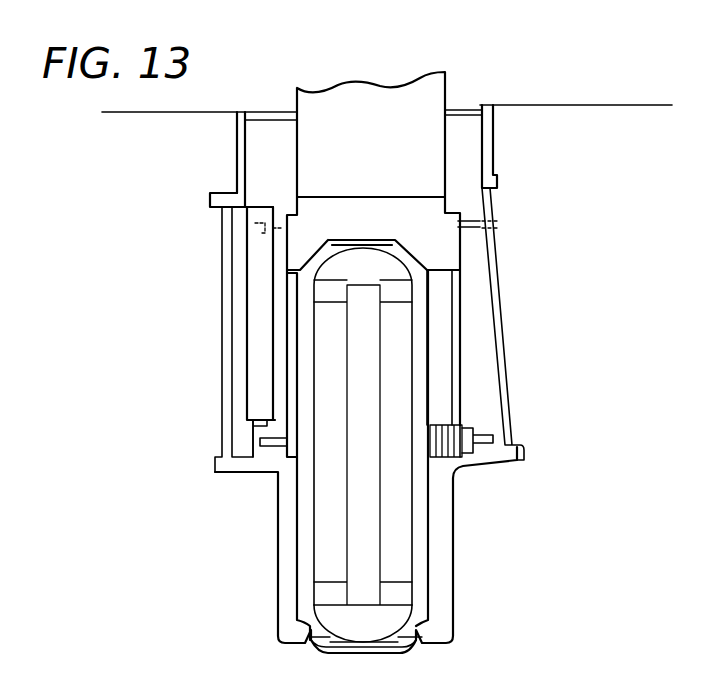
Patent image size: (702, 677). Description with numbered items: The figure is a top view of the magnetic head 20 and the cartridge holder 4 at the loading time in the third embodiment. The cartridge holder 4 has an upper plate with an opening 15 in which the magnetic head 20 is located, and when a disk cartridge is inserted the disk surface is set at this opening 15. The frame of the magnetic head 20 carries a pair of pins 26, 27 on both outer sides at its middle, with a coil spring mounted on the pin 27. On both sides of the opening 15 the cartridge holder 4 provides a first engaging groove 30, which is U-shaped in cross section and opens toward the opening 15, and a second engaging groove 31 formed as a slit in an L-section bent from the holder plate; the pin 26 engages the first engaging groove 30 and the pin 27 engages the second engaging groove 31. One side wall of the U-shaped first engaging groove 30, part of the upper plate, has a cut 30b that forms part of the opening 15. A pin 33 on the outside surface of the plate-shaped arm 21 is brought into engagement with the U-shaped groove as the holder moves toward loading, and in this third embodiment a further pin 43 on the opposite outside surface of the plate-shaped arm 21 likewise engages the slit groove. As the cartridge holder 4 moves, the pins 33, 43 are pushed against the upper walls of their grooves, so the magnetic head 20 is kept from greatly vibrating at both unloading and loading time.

The cartridge holder 4 is at (652, 179).
The opening 15 is at (433, 610).
The magnetic head 20 is at (443, 537).
The plate-shaped arm 21 is at (463, 146).
The pin 26 is at (273, 446).
The pin 27 is at (485, 445).
The first engaging groove 30 is at (260, 330).
The cut 30b is at (268, 426).
The second engaging groove 31 is at (500, 338).
The pin 33 is at (260, 230).
The pin 43 is at (470, 223).